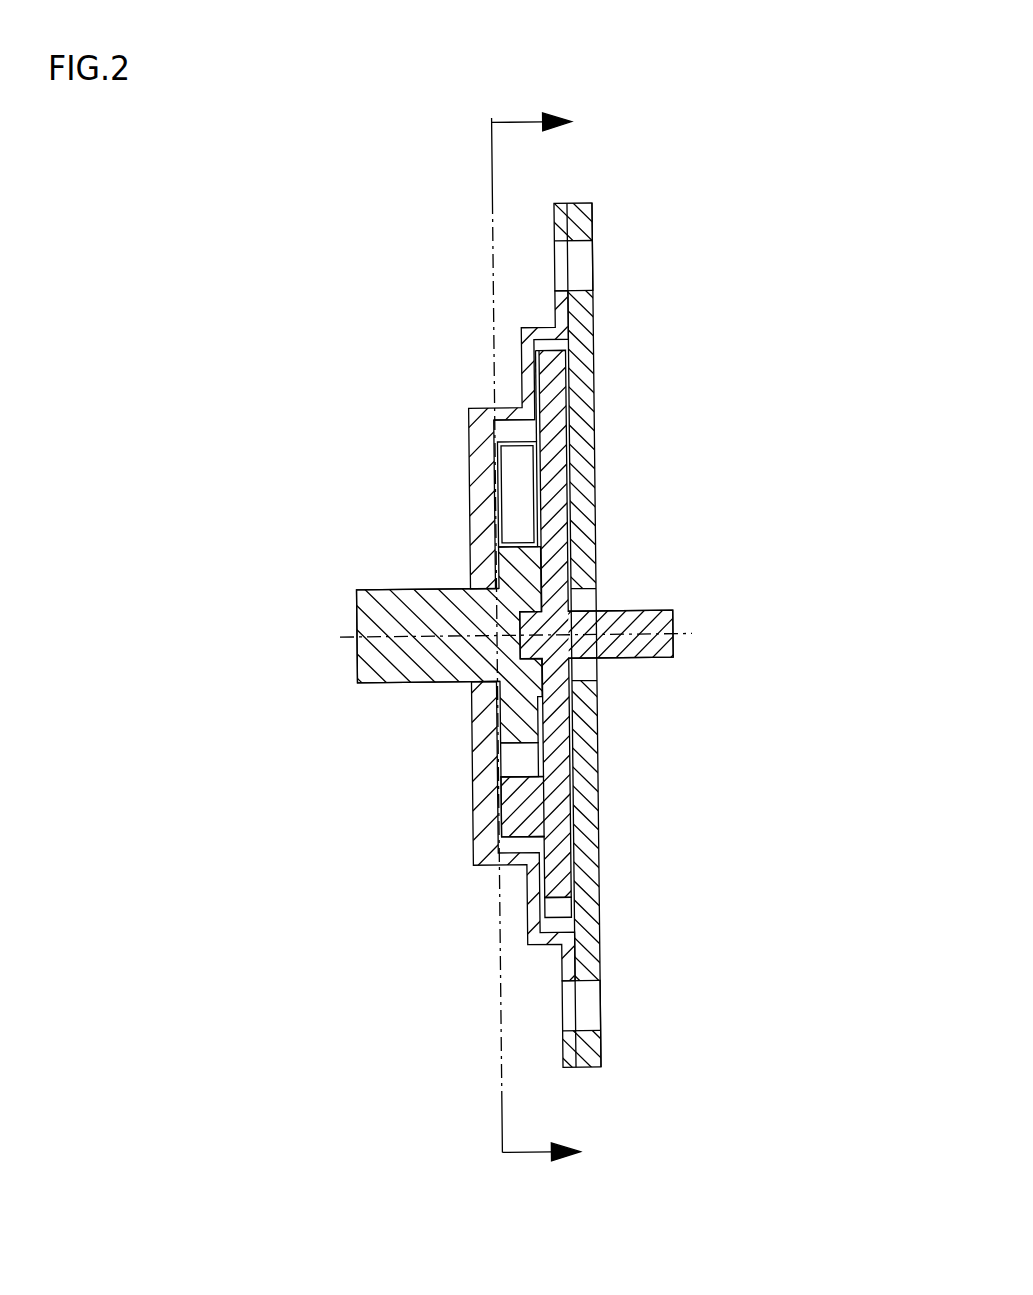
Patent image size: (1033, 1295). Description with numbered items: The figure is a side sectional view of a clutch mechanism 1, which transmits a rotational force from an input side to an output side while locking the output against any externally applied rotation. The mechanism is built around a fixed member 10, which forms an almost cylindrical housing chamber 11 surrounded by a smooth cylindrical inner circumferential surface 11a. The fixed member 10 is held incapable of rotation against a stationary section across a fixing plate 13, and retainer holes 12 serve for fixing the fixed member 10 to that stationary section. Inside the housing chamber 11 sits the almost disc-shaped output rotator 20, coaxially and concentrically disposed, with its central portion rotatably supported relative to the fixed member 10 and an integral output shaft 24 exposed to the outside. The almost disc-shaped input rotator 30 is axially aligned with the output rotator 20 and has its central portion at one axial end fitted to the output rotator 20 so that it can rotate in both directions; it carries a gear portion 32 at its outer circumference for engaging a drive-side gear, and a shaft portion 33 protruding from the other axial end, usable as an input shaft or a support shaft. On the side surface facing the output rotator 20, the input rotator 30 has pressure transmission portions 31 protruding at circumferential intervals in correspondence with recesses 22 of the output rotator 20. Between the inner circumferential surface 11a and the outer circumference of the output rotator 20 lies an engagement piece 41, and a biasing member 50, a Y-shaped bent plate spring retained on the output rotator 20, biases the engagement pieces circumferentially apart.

The clutch mechanism 1 is at (495, 646).
The fixed member 10 is at (545, 649).
The housing chamber 11 is at (515, 843).
The housing chamber inner circumferential surface 11a is at (515, 423).
The retainer holes 12 is at (574, 267).
The fixing plate 13 is at (577, 395).
The output rotator 20 is at (389, 649).
The recesses 22 is at (520, 752).
The output shaft 24 is at (382, 588).
The input rotator 30 is at (637, 620).
The pressure transmission portions 31 is at (522, 797).
The gear portion 32 is at (560, 907).
The shaft portion 33 is at (634, 607).
The engagement piece 41 is at (510, 443).
The biasing member 50 is at (518, 512).